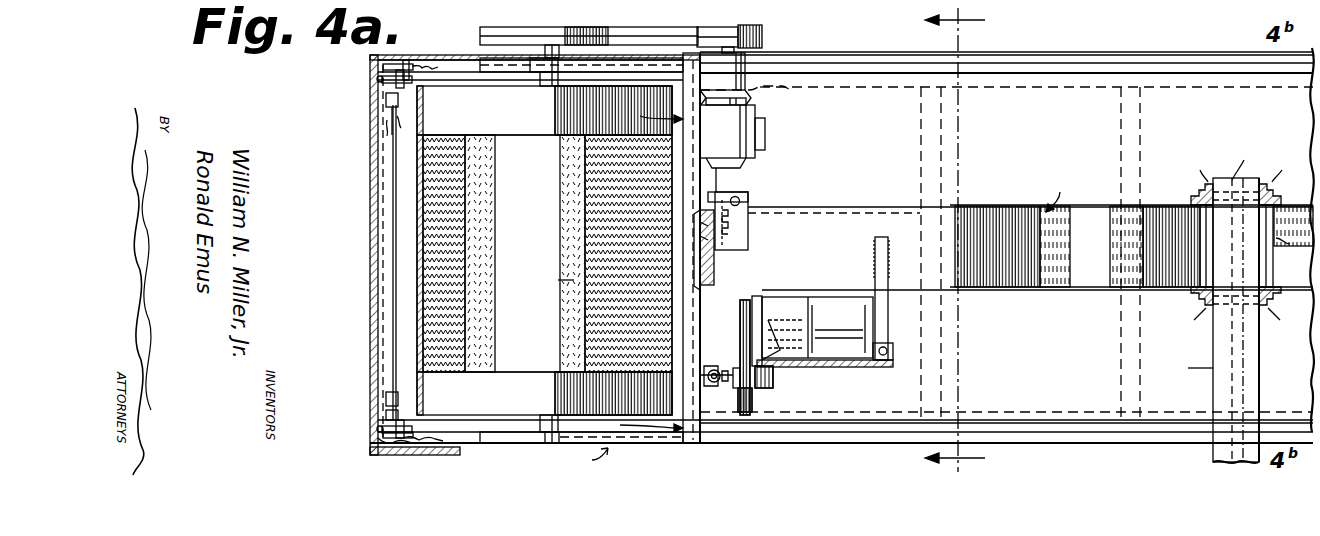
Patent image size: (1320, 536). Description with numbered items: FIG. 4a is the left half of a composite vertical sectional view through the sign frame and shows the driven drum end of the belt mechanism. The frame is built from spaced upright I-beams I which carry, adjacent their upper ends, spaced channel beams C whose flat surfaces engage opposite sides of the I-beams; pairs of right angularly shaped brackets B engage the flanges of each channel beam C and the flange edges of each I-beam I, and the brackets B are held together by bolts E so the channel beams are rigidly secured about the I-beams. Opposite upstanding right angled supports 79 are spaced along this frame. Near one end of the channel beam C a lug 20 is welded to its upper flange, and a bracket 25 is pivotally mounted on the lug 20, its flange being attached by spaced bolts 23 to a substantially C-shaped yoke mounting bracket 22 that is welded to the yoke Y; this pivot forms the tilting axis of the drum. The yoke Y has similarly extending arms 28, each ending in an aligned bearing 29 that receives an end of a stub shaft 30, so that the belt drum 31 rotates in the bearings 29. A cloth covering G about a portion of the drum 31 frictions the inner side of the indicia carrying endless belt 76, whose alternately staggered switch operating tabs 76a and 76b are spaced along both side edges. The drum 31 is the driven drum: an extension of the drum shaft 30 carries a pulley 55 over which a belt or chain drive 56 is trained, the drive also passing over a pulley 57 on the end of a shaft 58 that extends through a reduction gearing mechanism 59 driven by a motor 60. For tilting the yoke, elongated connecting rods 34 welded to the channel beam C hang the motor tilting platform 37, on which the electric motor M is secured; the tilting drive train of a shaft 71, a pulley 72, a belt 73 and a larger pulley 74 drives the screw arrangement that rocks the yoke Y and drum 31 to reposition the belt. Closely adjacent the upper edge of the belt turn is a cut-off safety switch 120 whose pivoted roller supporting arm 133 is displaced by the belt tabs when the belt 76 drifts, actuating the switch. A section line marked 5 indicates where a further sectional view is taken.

The indicia carrying endless belt 76 is at (412, 216).
The switch operating tab 76a is at (834, 78).
The switch operating tab 76b is at (1118, 418).
The pulley 55 is at (484, 30).
The stub shaft 30 is at (565, 46).
The arm 28 is at (631, 60).
The belt or chain drive 56 is at (678, 40).
The pulley 57 is at (764, 24).
The shaft 58 is at (764, 46).
The bearing 29 is at (539, 84).
The belt drum 31 is at (555, 120).
The roller supporting arm 133 is at (400, 56).
The cut-off safety switch 120 is at (424, 84).
The reduction gearing mechanism 59 is at (744, 82).
The motor 60 is at (748, 138).
The yoke mounting bracket 22 is at (714, 192).
The lug 20 is at (744, 206).
The bracket 25 is at (742, 232).
The bolt 23 is at (714, 256).
The pulley 72 is at (742, 303).
The shaft 71 is at (762, 307).
The belt 73 is at (768, 368).
The larger pulley 74 is at (746, 404).
The connecting rod 34 is at (870, 288).
The motor tilting platform 37 is at (842, 370).
The right angled support 79 is at (920, 158).
The section line 5- 5 is at (941, 237).
The cloth covering G is at (544, 250).
The electric motor M is at (1037, 325).
The channel beam C is at (1131, 229).
The I-beam I is at (1216, 301).
The bracket B is at (1236, 241).
The bolt E is at (1295, 240).
The yoke Y is at (630, 286).